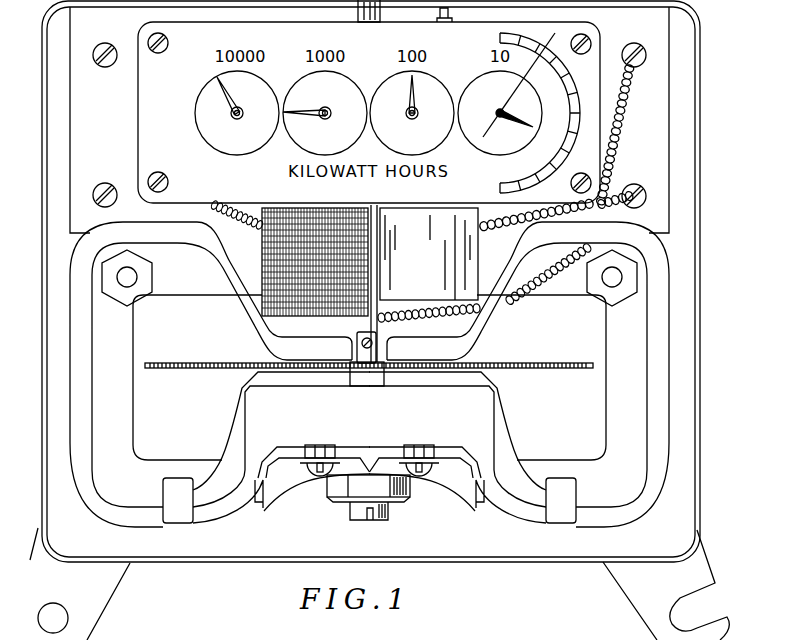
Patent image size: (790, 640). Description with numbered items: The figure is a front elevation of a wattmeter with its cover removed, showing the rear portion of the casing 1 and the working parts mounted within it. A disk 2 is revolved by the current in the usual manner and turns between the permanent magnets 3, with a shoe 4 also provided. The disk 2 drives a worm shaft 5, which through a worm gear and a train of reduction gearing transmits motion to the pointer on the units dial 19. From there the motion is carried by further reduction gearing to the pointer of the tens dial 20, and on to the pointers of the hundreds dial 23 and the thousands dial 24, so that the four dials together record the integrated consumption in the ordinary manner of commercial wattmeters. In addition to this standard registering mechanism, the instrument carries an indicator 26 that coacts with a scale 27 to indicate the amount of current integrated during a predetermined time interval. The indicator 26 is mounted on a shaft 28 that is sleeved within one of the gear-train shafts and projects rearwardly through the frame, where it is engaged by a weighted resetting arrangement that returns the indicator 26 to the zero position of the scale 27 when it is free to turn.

The rear portion of the casing 1 is at (700, 177).
The disk 2 is at (519, 362).
The permanent magnets 3 is at (243, 324).
The shoe 4 is at (369, 442).
The worm shaft 5 is at (366, 324).
The units dial 19 is at (500, 113).
The tens dial 20 is at (412, 113).
The hundreds dial 23 is at (325, 113).
The thousands dial 24 is at (237, 113).
The indicator 26 is at (531, 66).
The scale 27 is at (559, 33).
The shaft 28 is at (516, 114).